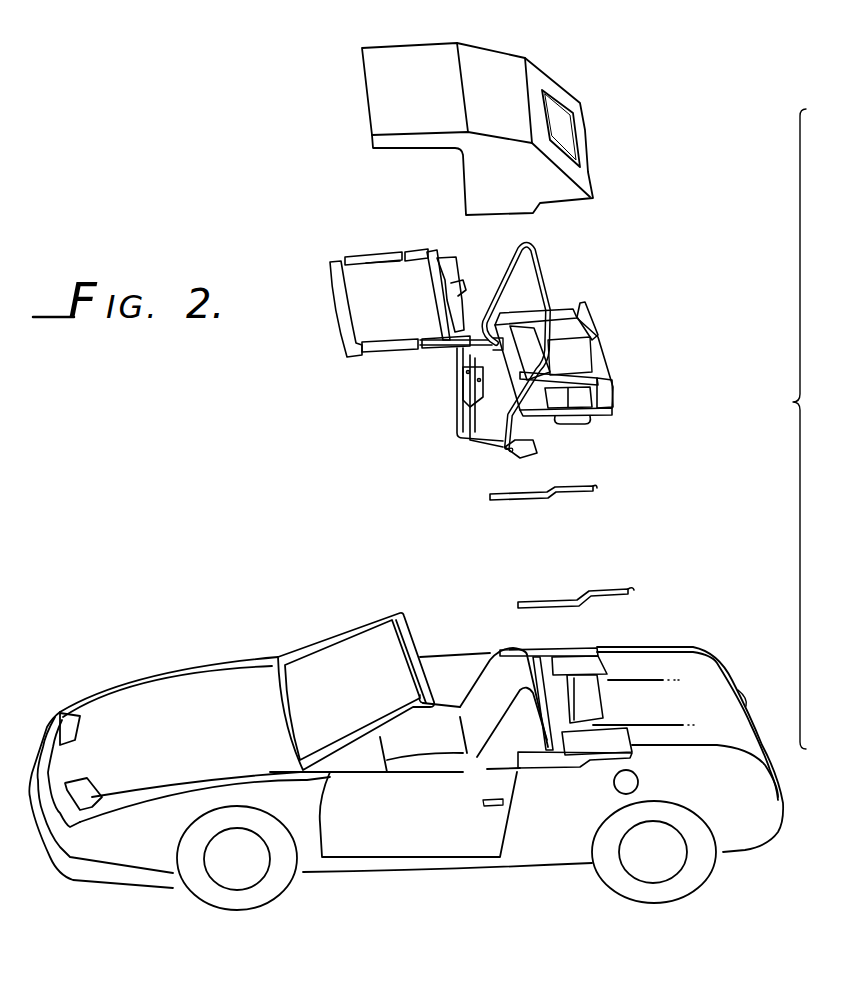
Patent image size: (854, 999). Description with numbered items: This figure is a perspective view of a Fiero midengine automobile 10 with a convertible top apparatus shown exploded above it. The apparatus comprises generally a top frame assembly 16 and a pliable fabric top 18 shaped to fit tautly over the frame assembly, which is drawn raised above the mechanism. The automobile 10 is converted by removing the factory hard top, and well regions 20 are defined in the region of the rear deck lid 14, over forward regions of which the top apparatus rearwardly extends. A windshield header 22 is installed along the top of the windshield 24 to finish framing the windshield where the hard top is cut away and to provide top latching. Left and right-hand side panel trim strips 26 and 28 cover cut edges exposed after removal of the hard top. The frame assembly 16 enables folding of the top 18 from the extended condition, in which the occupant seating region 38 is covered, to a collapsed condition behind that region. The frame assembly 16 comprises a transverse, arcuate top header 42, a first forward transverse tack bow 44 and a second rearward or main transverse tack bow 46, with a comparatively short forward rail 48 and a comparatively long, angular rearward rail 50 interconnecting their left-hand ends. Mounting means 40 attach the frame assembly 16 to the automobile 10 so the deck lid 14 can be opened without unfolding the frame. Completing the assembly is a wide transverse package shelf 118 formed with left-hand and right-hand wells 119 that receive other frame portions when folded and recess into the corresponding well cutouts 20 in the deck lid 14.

The automobile 10 is at (423, 888).
The rear deck lid 14 is at (663, 673).
The top frame assembly 16 is at (394, 384).
The fabric top 18 is at (533, 73).
The well regions 20 is at (583, 655).
The windshield header 22 is at (408, 620).
The windshield 24 is at (332, 653).
The left-hand side panel trim strip 26 is at (567, 597).
The right-hand side panel trim strip 28 is at (515, 502).
The occupant seating region 38 is at (455, 665).
The mounting means 40 is at (504, 464).
The top header 42 is at (330, 275).
The first forward transverse tack bow 44 is at (437, 283).
The second rearward main transverse tack bow 46 is at (540, 277).
The forward rail 48 is at (394, 341).
The rearward rail 50 is at (456, 387).
The package shelf 118 is at (587, 425).
The package shelf wells 119 is at (572, 331).